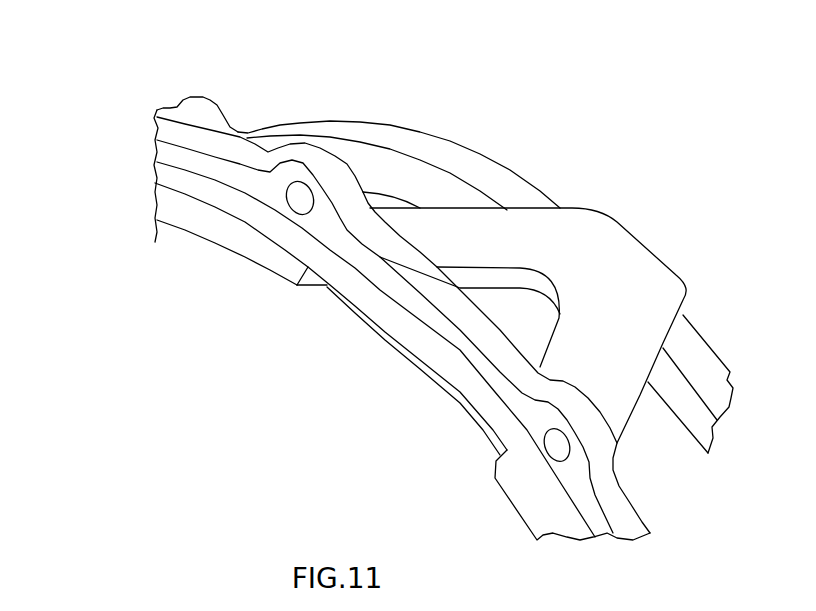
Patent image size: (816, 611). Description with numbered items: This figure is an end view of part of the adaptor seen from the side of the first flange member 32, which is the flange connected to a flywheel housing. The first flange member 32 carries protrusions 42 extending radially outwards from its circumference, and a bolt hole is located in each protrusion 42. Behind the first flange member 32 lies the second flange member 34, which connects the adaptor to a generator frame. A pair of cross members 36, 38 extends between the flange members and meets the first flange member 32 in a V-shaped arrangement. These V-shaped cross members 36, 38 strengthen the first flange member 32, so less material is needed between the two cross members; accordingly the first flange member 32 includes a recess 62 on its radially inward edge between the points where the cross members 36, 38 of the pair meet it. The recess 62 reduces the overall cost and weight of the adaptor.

The first flange member 32 is at (170, 206).
The second flange member 34 is at (498, 180).
The cross member 36 is at (447, 222).
The cross member 38 is at (633, 390).
The protrusion 42 is at (320, 158).
The recess 62 is at (310, 277).